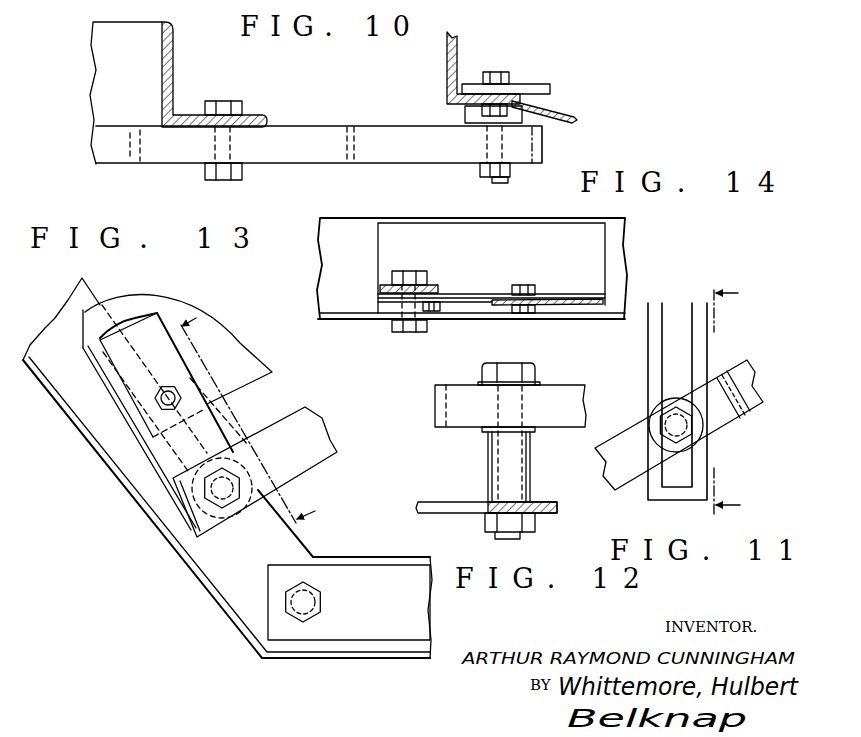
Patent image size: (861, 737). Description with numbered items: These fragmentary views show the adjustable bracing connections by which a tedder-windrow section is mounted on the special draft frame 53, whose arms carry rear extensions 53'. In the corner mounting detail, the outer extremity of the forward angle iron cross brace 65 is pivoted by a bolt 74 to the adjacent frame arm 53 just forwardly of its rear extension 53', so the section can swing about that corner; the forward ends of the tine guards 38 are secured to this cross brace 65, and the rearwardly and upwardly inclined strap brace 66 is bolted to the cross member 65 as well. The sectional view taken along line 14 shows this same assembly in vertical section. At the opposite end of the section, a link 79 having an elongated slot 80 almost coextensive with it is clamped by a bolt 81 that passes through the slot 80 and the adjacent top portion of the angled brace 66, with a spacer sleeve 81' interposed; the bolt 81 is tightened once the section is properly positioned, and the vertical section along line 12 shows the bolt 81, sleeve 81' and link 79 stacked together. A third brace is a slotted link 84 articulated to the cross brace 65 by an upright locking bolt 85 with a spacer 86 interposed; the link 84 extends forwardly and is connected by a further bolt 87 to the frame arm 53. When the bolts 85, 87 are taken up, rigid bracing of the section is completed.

In FIG. 10, the draft frame 53 is at (178, 93).
In FIG. 14, the draft frame 53 is at (472, 255).
In FIG. 13, the draft frame 53 is at (227, 468).
In FIG. 13, the rear extension 53' is at (349, 628).
In FIG. 10, the slotted link 84 is at (358, 138).
In FIG. 10, the bolt 87 is at (232, 145).
In FIG. 10, the angle iron cross brace 65 is at (456, 76).
In FIG. 14, the angle iron cross brace 65 is at (473, 293).
In FIG. 13, the angle iron cross brace 65 is at (213, 425).
In FIG. 10, the inclined strap brace 66 is at (530, 89).
In FIG. 14, the inclined strap brace 66 is at (437, 286).
In FIG. 12, the inclined strap brace 66 is at (467, 509).
In FIG. 11, the inclined strap brace 66 is at (720, 416).
In FIG. 13, the inclined strap brace 66 is at (310, 463).
In FIG. 10, the tine guard 38 is at (570, 118).
In FIG. 14, the tine guard 38 is at (583, 305).
In FIG. 13, the tine guard 38 is at (238, 358).
In FIG. 10, the spacer 86 is at (472, 115).
In FIG. 10, the upright locking bolt 85 is at (500, 173).
In FIG. 12, the link 79 is at (567, 415).
In FIG. 11, the link 79 is at (700, 353).
In FIG. 12, the elongated slot 80 is at (448, 400).
In FIG. 11, the elongated slot 80 is at (690, 307).
In FIG. 12, the bolt 81 is at (511, 440).
In FIG. 11, the bolt 81 is at (703, 436).
In FIG. 12, the spacer sleeve 81' is at (520, 432).
In FIG. 11, the spacer sleeve 81' is at (648, 407).
In FIG. 13, the bolt 74 is at (224, 492).
In FIG. 11, the section line 12— 12 is at (738, 403).
In FIG. 13, the section line 14— 14 is at (262, 423).